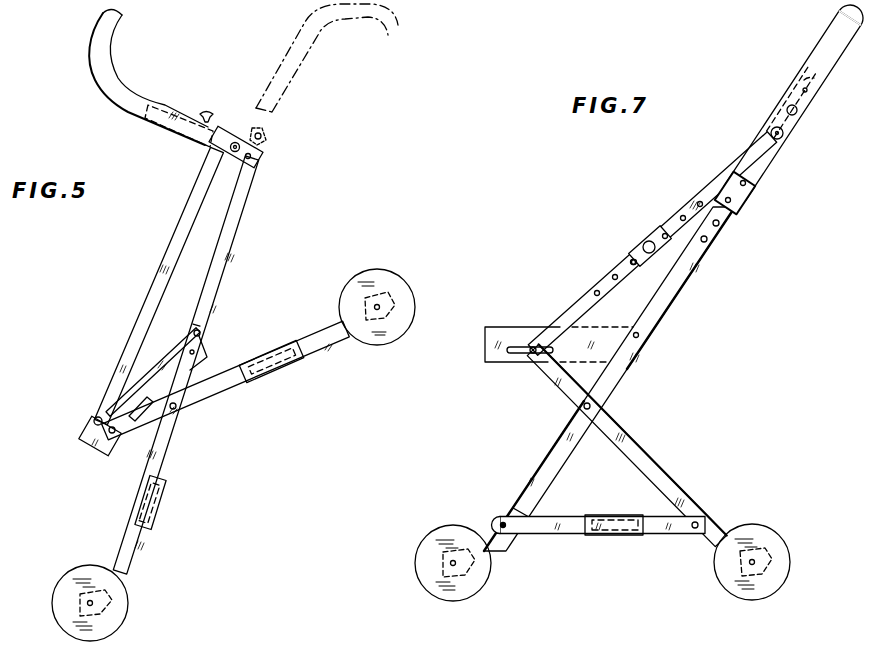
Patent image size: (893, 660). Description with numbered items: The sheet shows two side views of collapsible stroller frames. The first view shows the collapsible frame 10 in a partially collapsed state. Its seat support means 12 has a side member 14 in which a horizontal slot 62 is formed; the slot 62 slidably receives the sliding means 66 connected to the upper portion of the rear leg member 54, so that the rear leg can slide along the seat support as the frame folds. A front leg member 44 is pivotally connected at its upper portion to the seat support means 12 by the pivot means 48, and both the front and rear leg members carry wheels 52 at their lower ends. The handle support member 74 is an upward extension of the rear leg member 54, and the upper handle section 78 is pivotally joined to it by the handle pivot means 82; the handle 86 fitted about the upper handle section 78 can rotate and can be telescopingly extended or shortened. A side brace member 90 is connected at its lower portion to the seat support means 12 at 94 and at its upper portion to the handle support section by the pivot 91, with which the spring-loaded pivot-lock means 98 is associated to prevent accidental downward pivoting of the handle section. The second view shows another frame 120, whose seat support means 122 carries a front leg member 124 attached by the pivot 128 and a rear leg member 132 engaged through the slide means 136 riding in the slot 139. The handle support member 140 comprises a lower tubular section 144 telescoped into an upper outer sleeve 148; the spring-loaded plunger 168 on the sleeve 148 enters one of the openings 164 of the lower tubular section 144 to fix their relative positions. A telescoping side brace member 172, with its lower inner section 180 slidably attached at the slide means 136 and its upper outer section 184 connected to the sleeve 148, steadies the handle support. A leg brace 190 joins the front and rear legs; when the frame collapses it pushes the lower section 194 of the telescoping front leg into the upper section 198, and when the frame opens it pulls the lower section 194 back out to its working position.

In FIG. 5, the collapsible frame 10 is at (357, 221).
In FIG. 5, the seat support means 12 is at (82, 458).
In FIG. 5, the side member 14 is at (163, 362).
In FIG. 5, the front leg member 44 is at (162, 463).
In FIG. 5, the pivot means 48 is at (204, 333).
In FIG. 5, the wheels 52 is at (401, 282).
In FIG. 5, the rear leg member 54 is at (226, 391).
In FIG. 5, the horizontal slot 62 is at (128, 410).
In FIG. 5, the sliding means 66 is at (124, 446).
In FIG. 5, the handle support member 74 is at (232, 228).
In FIG. 5, the upper handle section 78 is at (180, 108).
In FIG. 5, the handle pivot means 82 is at (265, 158).
In FIG. 5, the handle 86 is at (94, 45).
In FIG. 5, the side brace member 90 is at (157, 282).
In FIG. 5, the pivot 91 is at (248, 133).
In FIG. 5, the connection point 94 is at (92, 422).
In FIG. 5, the pivot-lock means 98 is at (230, 156).
In FIG. 7, the collapsible stroller frame 120 is at (746, 259).
In FIG. 7, the seat support means 122 is at (485, 345).
In FIG. 7, the front leg member 124 is at (521, 483).
In FIG. 7, the pivot 128 is at (640, 336).
In FIG. 7, the rear leg member 132 is at (645, 462).
In FIG. 7, the slide means 136 is at (534, 356).
In FIG. 7, the slot 139 is at (512, 355).
In FIG. 7, the handle support member 140 is at (683, 278).
In FIG. 7, the lower tubular section 144 is at (731, 222).
In FIG. 7, the upper outer sleeve 148 is at (768, 160).
In FIG. 7, the openings 164 is at (647, 240).
In FIG. 7, the spring-loaded plunger 168 is at (798, 110).
In FIG. 7, the side brace member 172 is at (598, 285).
In FIG. 7, the lower inner section 180 is at (573, 315).
In FIG. 7, the upper outer section 184 is at (691, 203).
In FIG. 7, the leg brace 190 is at (568, 535).
In FIG. 7, the lower section 194 is at (498, 517).
In FIG. 7, the telescoping upper section 198 is at (557, 447).